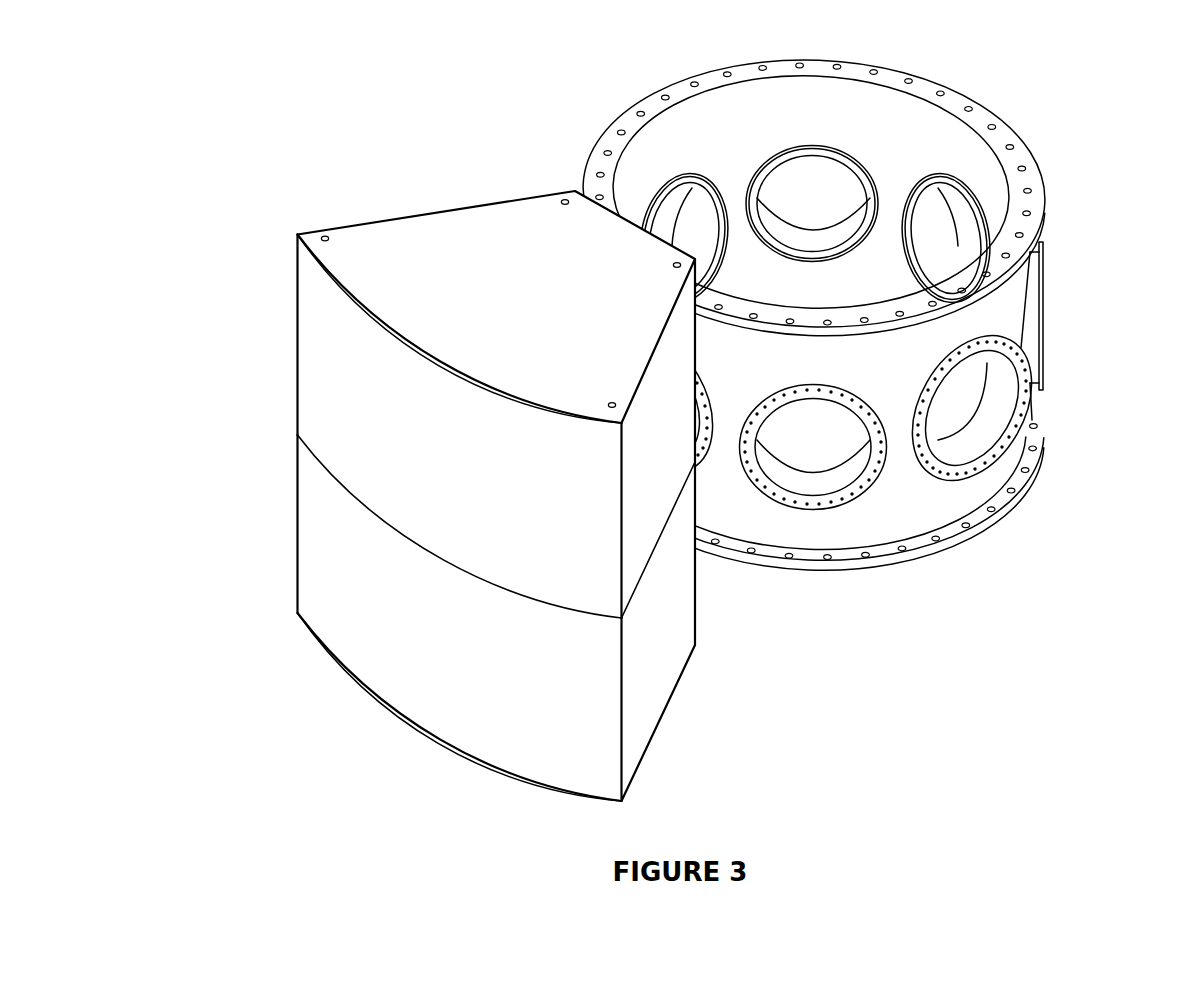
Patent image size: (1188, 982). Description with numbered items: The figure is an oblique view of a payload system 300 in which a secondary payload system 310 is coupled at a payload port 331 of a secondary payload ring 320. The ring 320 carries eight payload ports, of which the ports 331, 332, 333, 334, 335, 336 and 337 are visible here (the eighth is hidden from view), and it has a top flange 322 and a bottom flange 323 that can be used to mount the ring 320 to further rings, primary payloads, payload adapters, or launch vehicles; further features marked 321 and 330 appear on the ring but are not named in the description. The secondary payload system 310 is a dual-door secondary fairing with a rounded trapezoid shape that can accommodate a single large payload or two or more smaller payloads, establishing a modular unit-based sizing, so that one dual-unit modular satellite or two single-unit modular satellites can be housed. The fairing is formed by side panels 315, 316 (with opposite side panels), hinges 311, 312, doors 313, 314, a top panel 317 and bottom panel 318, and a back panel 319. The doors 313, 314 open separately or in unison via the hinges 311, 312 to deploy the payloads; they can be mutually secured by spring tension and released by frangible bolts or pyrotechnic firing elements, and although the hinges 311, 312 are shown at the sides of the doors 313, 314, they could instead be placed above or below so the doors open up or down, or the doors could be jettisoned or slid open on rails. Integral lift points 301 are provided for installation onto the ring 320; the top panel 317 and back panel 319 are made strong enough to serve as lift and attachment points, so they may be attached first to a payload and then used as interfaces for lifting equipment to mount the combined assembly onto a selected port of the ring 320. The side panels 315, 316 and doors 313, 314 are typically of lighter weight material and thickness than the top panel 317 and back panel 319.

The system 300 is at (306, 104).
The integral lift points 301 is at (331, 239).
The secondary payload system 310 is at (281, 325).
The hinge 311 is at (290, 354).
The hinge 312 is at (290, 523).
The door 313 is at (569, 587).
The door 314 is at (569, 758).
The side panel 315 is at (630, 447).
The side panel 316 is at (631, 646).
The top panel 317 is at (598, 320).
The bottom panel 318 is at (418, 747).
The back panel 319 is at (708, 603).
The secondary payload ring 320 is at (595, 125).
The housing sidewall 321 is at (946, 501).
The top flange 322 is at (688, 73).
The bottom flange 323 is at (1024, 510).
The port flange 330 is at (844, 512).
The payload port 331 is at (712, 404).
The payload port 332 is at (802, 429).
The payload port 333 is at (947, 416).
The payload port 334 is at (1050, 306).
The payload port 335 is at (945, 198).
The payload port 336 is at (817, 180).
The payload port 337 is at (681, 199).